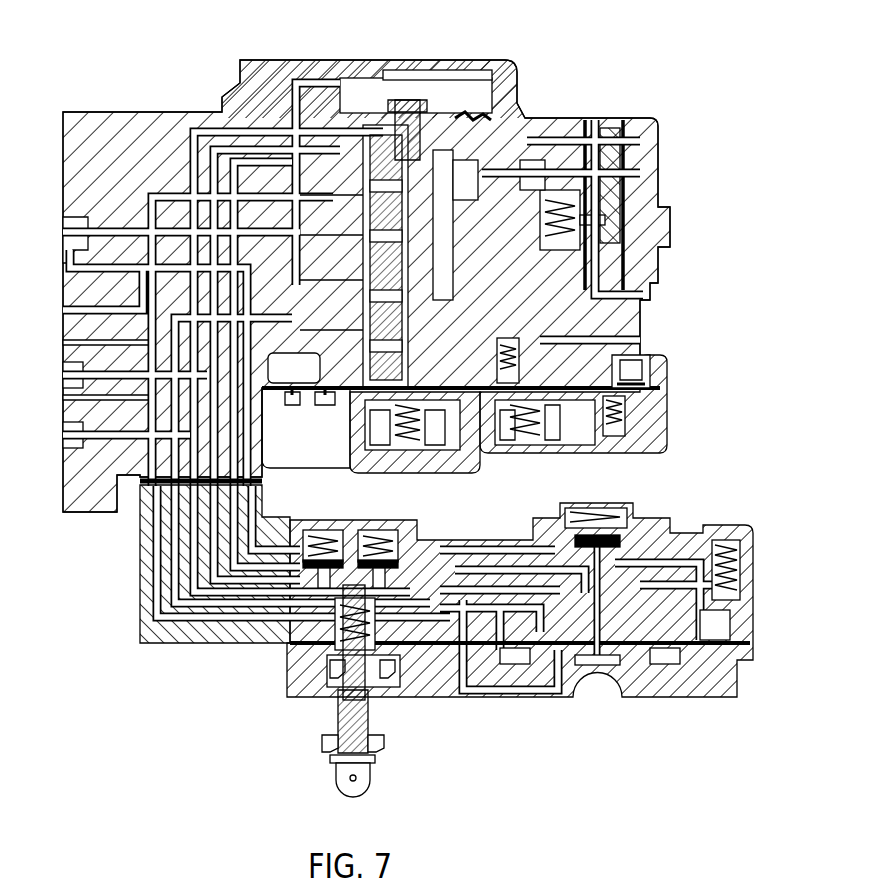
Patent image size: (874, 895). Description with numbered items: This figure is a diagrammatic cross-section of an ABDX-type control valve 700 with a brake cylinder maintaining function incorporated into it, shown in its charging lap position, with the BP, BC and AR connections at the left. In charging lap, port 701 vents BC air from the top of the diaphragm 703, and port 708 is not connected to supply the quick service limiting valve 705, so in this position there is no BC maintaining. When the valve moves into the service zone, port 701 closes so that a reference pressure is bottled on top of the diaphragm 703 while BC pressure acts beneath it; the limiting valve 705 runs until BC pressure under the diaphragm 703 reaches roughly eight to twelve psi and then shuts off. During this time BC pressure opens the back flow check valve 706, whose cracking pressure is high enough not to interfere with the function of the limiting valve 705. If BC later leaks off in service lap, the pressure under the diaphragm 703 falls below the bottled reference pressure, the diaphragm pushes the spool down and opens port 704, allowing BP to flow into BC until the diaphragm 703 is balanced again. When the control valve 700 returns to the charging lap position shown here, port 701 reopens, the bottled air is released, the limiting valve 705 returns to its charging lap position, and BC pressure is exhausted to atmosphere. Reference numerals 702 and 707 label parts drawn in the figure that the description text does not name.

The ABDX-type control valve 700 is at (148, 80).
The port 701 is at (328, 392).
The cover / adjusting screw 702 is at (482, 118).
The diaphragm 703 is at (520, 402).
The port 704 is at (512, 366).
The quick service limiting valve 705 is at (565, 426).
The back flow check valve 706 is at (612, 404).
The valve element 707 is at (618, 372).
The port 708 is at (345, 262).